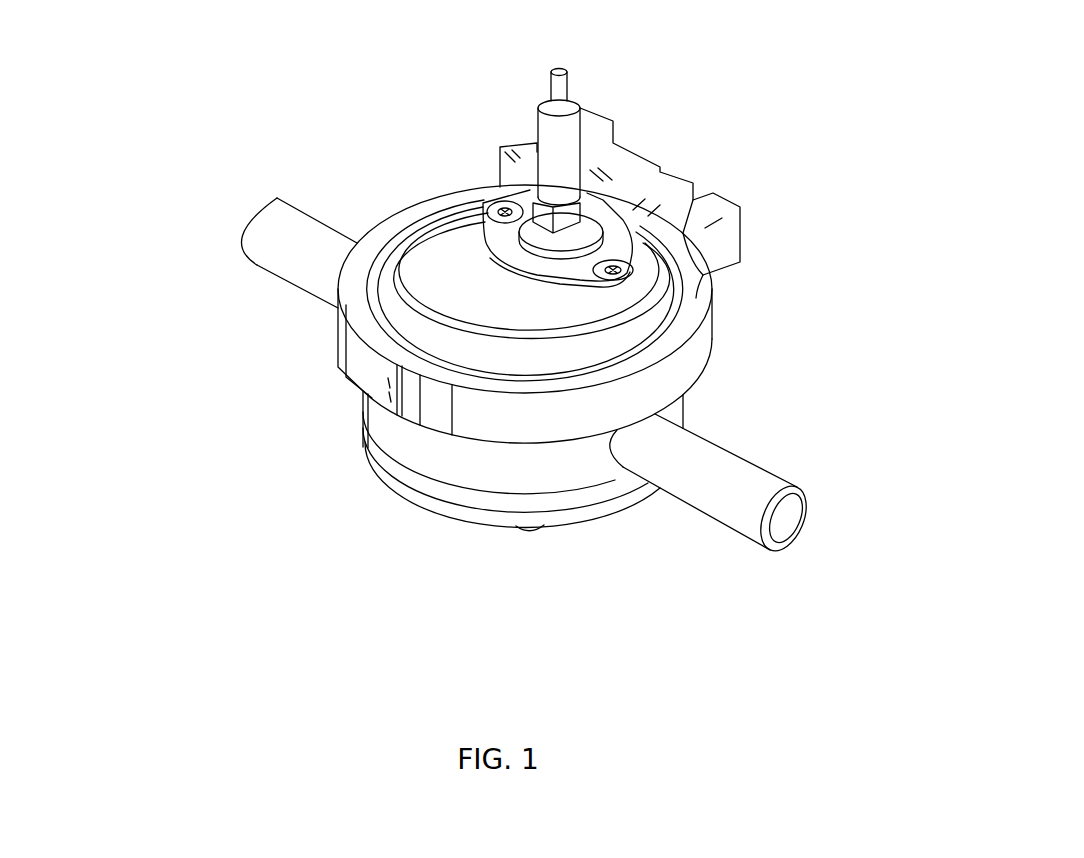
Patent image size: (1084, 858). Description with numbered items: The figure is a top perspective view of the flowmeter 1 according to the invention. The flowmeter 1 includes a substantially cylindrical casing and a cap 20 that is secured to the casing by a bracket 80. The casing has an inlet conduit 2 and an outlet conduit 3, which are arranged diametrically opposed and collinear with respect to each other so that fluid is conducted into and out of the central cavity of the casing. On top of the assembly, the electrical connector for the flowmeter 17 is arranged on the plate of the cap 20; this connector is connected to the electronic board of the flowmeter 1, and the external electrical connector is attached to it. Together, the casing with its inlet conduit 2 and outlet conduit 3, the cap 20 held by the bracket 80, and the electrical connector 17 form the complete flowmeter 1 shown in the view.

The flowmeter 1 is at (455, 466).
The inlet conduit 2 is at (307, 274).
The outlet conduit 3 is at (712, 501).
The electrical connector for the flowmeter 17 is at (541, 121).
The cap 20 is at (433, 225).
The bracket 80 is at (711, 296).